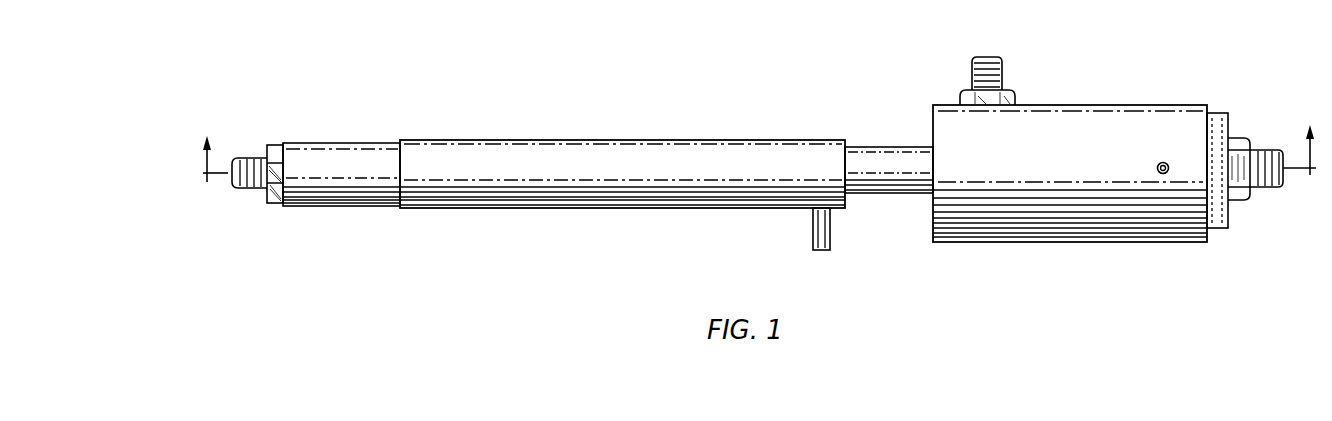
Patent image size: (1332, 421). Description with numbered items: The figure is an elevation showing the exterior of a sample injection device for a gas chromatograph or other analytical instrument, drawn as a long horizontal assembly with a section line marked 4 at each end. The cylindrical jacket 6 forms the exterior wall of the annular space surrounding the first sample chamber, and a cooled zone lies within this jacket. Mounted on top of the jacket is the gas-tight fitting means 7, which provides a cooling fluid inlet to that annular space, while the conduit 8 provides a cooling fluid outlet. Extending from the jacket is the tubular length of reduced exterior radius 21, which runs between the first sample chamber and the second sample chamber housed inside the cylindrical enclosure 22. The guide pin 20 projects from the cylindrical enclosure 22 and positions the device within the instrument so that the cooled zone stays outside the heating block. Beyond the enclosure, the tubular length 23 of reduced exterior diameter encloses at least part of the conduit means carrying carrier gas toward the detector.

The cylindrical jacket 6 is at (1082, 105).
The gas-tight fitting means 7 is at (1002, 73).
The conduit 8 is at (1158, 165).
The guide pin 20 is at (830, 232).
The tubular length of reduced exterior radius 21 is at (874, 147).
The cylindrical enclosure 22 is at (679, 140).
The tubular length 23 is at (332, 143).
The section line 4- 4 is at (757, 137).